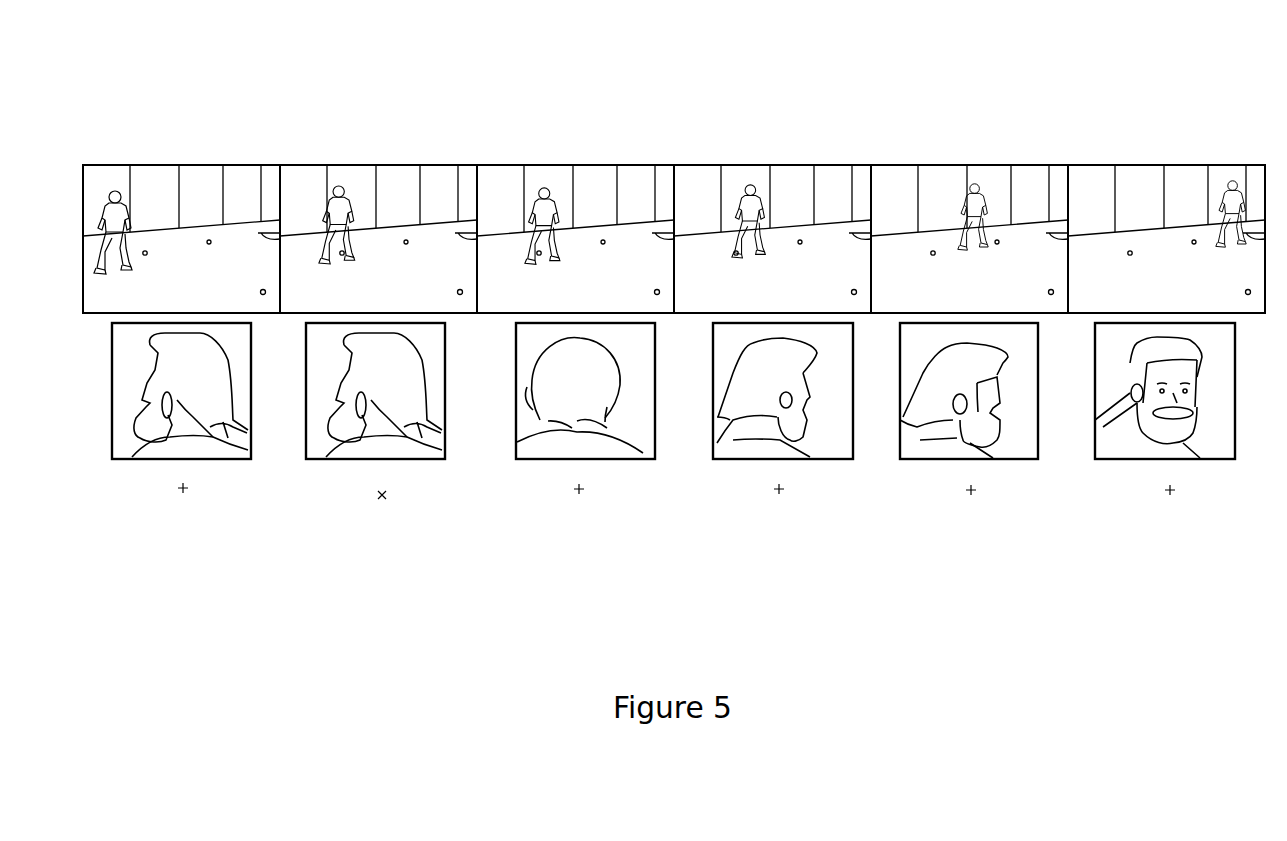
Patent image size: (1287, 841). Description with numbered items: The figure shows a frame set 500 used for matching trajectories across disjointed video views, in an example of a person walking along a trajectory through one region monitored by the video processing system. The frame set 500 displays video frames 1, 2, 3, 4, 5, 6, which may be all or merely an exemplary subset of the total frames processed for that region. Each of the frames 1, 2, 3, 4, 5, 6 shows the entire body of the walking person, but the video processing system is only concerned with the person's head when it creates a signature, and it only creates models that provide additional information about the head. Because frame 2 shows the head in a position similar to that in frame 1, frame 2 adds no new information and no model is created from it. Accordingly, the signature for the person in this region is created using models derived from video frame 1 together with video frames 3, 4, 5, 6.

The frame set 500 is at (291, 60).
The video frame 1 is at (181, 359).
The video frame 2 is at (378, 359).
The video frame 3 is at (575, 359).
The video frame 4 is at (772, 359).
The video frame 5 is at (969, 359).
The video frame 6 is at (1166, 359).